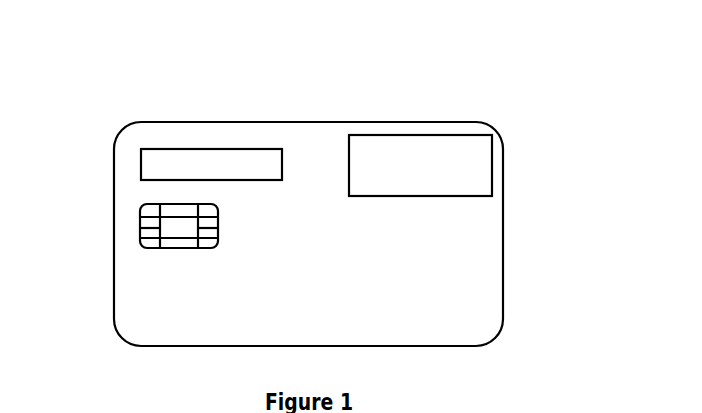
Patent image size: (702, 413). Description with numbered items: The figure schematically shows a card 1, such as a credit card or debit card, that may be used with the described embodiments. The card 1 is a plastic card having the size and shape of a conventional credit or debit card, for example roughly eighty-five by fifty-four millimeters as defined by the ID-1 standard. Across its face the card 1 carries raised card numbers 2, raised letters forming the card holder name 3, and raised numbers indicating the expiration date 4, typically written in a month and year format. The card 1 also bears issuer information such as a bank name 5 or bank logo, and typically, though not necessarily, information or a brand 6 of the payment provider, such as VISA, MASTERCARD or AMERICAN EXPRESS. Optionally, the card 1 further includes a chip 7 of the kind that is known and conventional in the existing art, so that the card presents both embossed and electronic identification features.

The card 1 is at (503, 225).
The card numbers 2 is at (460, 271).
The card holder name 3 is at (190, 330).
The expiration date 4 is at (420, 313).
The bank name 5 is at (202, 148).
The brand of the payment provider 6 is at (405, 135).
The chip 7 is at (140, 222).